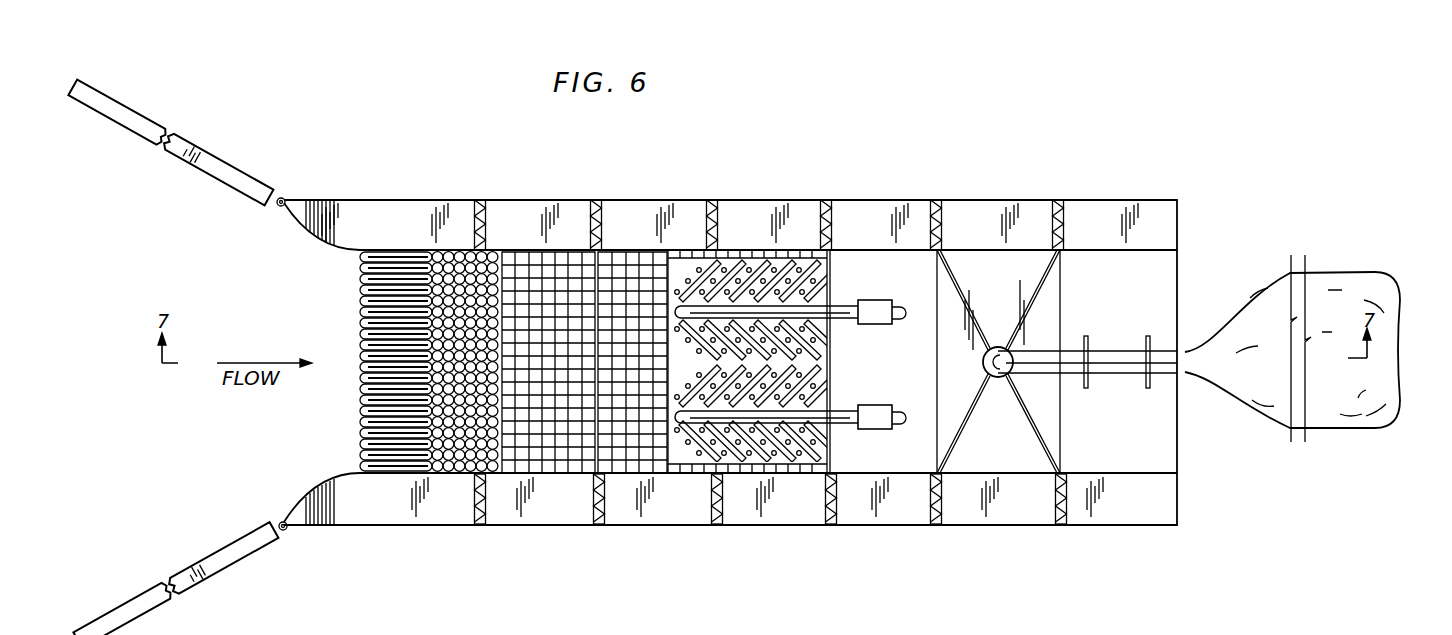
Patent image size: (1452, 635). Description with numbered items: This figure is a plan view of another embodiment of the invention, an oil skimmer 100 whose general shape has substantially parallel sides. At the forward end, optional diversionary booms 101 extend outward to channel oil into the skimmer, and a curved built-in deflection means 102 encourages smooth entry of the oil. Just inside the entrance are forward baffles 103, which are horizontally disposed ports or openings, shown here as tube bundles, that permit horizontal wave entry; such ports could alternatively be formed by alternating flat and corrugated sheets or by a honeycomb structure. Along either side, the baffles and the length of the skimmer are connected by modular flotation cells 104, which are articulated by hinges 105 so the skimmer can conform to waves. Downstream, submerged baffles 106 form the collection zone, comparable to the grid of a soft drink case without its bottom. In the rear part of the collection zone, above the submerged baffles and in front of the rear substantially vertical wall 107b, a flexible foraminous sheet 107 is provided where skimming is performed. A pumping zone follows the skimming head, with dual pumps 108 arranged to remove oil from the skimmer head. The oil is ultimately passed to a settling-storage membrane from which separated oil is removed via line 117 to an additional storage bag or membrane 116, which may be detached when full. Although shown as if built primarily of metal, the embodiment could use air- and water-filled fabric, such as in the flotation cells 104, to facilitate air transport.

The skimmer 100 is at (784, 192).
The diversionary booms 101 is at (223, 160).
The deflection means 102 is at (313, 236).
The forward baffles 103 is at (372, 413).
The modular flotation cells 104 is at (525, 207).
The hinges 105 is at (485, 505).
The submerged baffles 106 is at (632, 262).
The flexible foraminous sheet 107 is at (754, 465).
The rear substantially vertical wall 107b is at (810, 258).
The dual pumps 108 is at (877, 300).
The storage bag or membrane 116 is at (1334, 282).
The line 117 is at (1072, 352).